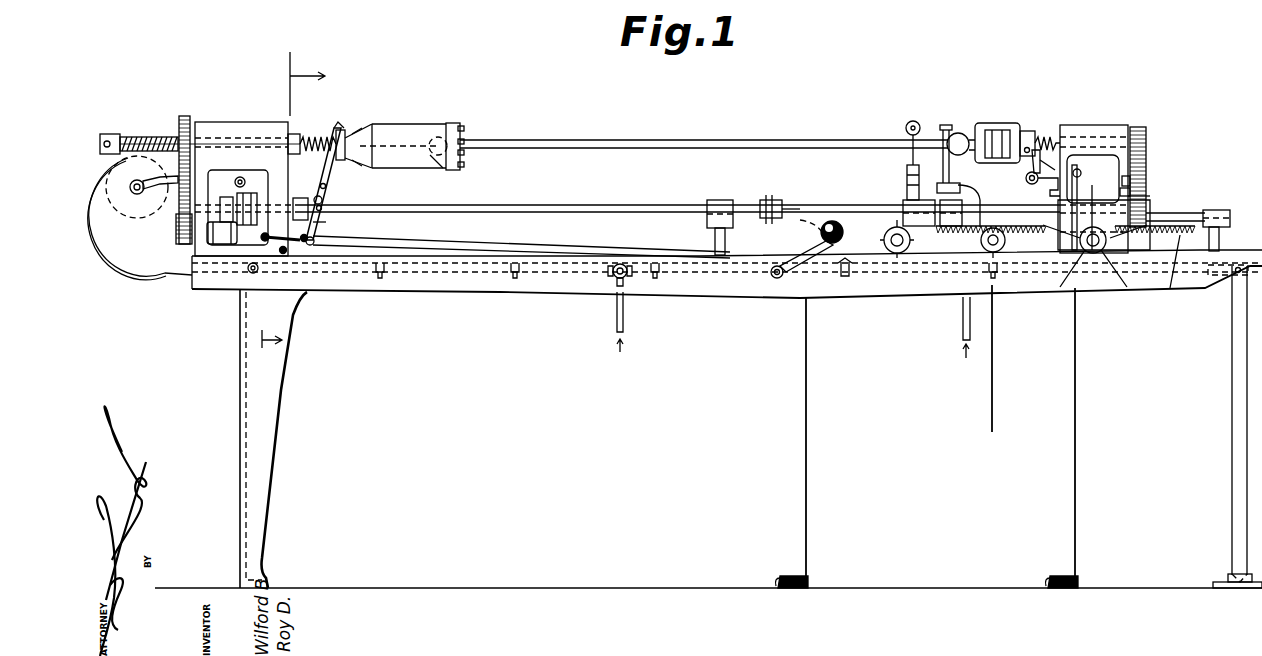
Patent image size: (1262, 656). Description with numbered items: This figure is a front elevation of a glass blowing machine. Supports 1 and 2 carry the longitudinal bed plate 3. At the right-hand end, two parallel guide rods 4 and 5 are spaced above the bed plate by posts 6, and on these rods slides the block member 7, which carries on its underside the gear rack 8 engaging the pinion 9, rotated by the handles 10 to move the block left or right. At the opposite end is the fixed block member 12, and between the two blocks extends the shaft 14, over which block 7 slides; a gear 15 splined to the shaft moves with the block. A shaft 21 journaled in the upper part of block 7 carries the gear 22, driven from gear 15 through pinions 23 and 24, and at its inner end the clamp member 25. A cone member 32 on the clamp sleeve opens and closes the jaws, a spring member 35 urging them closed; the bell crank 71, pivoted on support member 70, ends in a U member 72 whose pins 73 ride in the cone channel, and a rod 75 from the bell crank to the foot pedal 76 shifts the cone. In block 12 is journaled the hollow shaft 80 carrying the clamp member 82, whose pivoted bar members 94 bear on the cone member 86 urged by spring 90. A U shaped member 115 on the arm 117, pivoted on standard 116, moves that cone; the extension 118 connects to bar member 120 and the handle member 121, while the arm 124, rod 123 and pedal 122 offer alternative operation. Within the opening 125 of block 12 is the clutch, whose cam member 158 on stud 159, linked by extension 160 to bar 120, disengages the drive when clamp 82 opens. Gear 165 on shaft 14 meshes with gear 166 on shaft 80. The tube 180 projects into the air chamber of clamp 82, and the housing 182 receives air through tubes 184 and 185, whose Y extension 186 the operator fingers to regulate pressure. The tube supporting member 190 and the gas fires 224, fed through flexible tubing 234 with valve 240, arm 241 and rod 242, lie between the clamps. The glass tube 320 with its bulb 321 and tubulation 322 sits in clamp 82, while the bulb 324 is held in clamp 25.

The support 1 is at (275, 405).
The support 2 is at (1236, 432).
The bed plate 3 is at (546, 282).
The guide rod 4 is at (293, 199).
The guide rod 5 is at (1190, 222).
The post 6 is at (712, 236).
The block member 7 is at (1132, 180).
The gear rack 8 is at (1181, 235).
The pinion 9 is at (1094, 255).
The handle 10 is at (1078, 241).
The block member 12 is at (246, 115).
The shaft 14 is at (503, 207).
The gear 15 is at (1138, 195).
The shaft 21 is at (1042, 151).
The gear 22 is at (1135, 138).
The pinion 23 is at (1150, 166).
The pinion 24 is at (1148, 186).
The clamp member 25 is at (990, 123).
The cone member 32 is at (1027, 131).
The spring member 35 is at (1046, 137).
The support member 70 is at (1052, 186).
The bell crank 71 is at (1040, 168).
The U member 72 is at (1026, 176).
The pin 73 is at (1028, 147).
The rod 75 is at (1077, 408).
The foot pedal 76 is at (1080, 578).
The hollow shaft 80 is at (316, 138).
The clamp member 82 is at (397, 124).
The cone member 86 is at (343, 131).
The spring 90 is at (318, 150).
The bar member 94 is at (362, 128).
The U shaped member 115 is at (332, 150).
The standard 116 is at (331, 212).
The arm 117 is at (326, 190).
The extension 118 is at (326, 223).
The bar member 120 is at (481, 247).
The handle member 121 is at (820, 240).
The pedal 122 is at (808, 578).
The rod 123 is at (808, 462).
The arm 124 is at (803, 272).
The opening 125 is at (210, 242).
The cam member 158 is at (292, 248).
The stud 159 is at (298, 243).
The extension 160 is at (283, 252).
The gear 165 is at (176, 241).
The gear 166 is at (184, 116).
The tube 180 is at (403, 154).
The housing 182 is at (110, 129).
The tube 184 is at (137, 262).
The tube 185 is at (626, 306).
The Y extension 186 is at (859, 277).
The tube supporting member 190 is at (918, 168).
The gas fires 224 is at (943, 128).
The flexible tubing 234 is at (965, 236).
The valve 240 is at (963, 282).
The arm 241 is at (991, 252).
The rod 242 is at (994, 350).
The glass tube 320 is at (703, 140).
The bulb 321 is at (462, 114).
The tubulation 322 is at (441, 168).
The glass bulb 324 is at (957, 133).